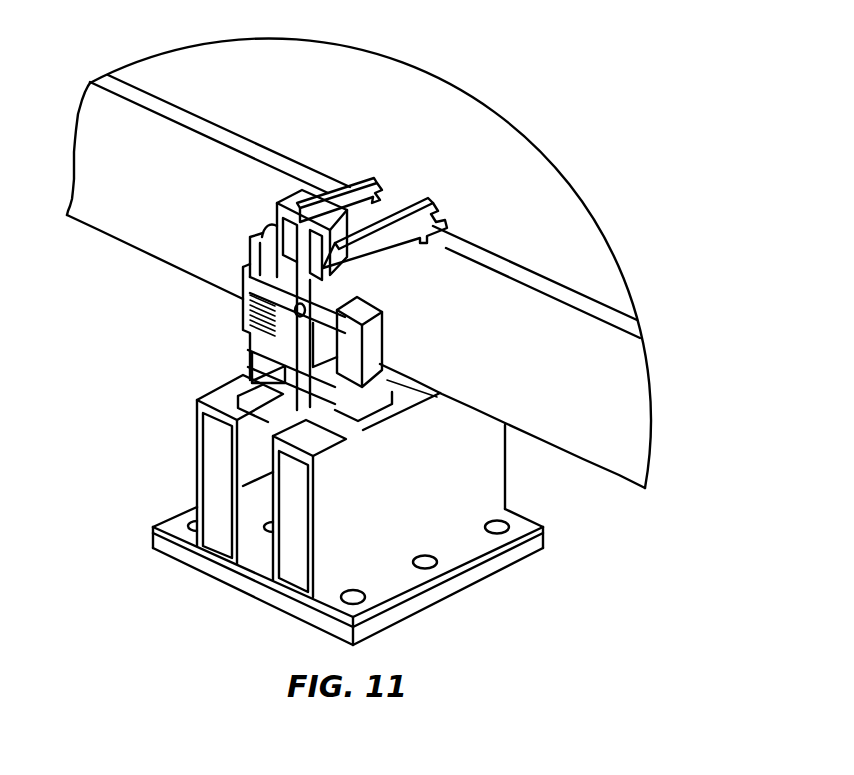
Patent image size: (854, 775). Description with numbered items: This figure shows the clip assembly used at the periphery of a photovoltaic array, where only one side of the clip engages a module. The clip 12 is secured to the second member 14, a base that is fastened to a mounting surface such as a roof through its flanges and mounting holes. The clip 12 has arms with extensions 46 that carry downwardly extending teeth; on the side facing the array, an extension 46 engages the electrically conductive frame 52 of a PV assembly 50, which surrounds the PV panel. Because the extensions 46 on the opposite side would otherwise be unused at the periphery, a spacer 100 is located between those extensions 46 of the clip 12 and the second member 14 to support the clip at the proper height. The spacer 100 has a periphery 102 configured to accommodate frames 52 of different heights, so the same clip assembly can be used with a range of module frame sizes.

The clip 12 is at (443, 193).
The second member 14 is at (182, 453).
The extensions 46 is at (440, 211).
The PV assembly 50 is at (617, 229).
The frame 52 is at (614, 432).
The spacer 100 is at (232, 315).
The periphery 102 is at (368, 346).